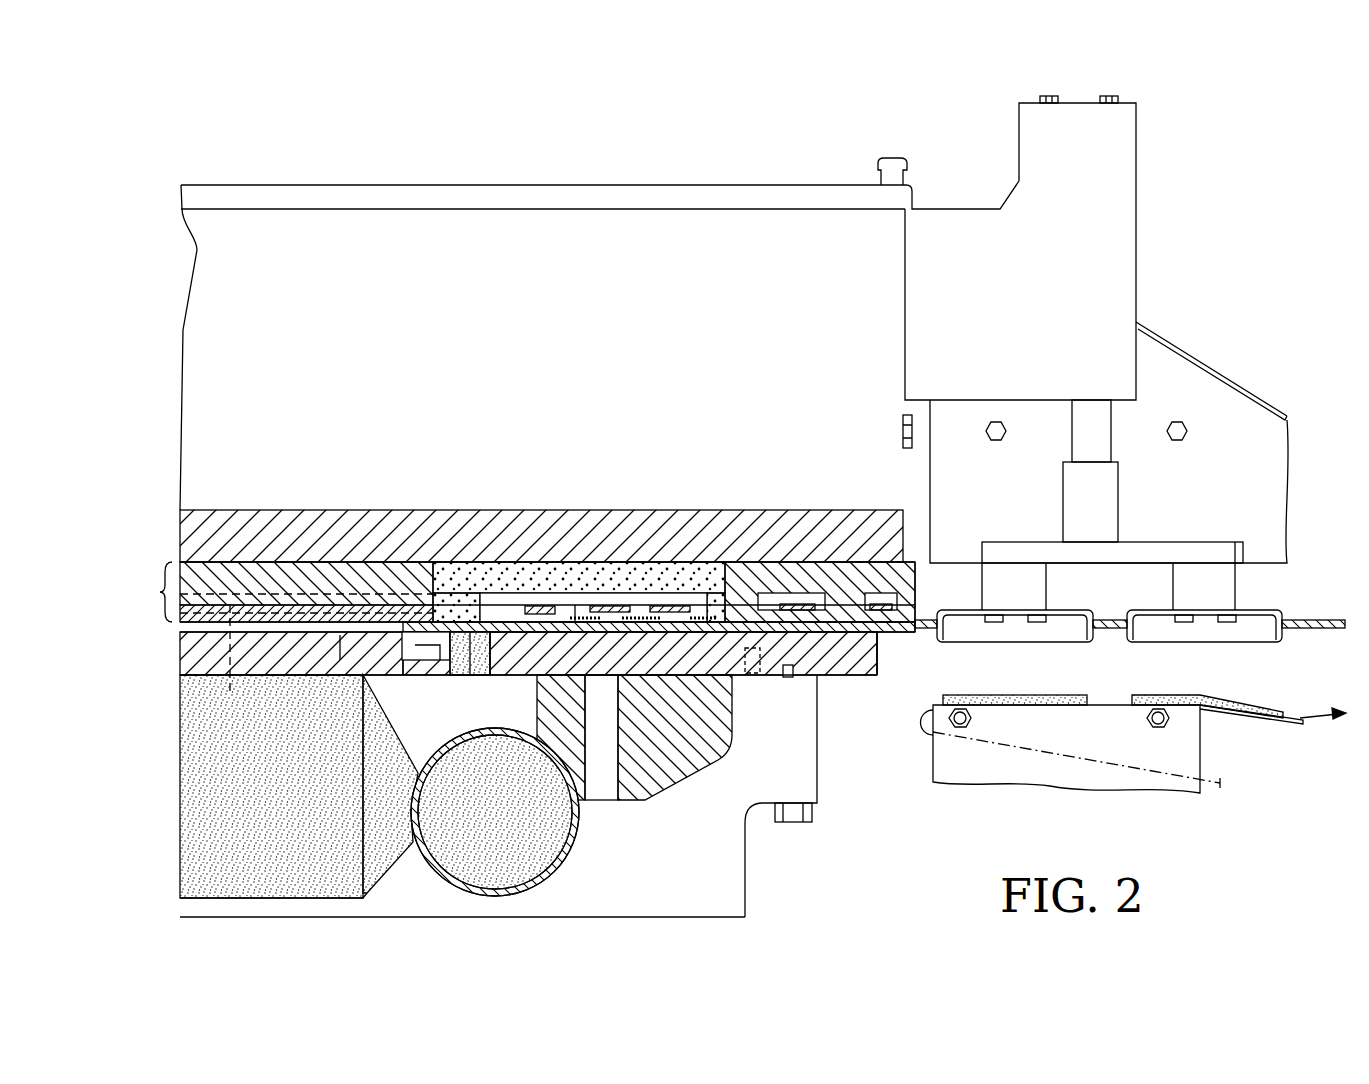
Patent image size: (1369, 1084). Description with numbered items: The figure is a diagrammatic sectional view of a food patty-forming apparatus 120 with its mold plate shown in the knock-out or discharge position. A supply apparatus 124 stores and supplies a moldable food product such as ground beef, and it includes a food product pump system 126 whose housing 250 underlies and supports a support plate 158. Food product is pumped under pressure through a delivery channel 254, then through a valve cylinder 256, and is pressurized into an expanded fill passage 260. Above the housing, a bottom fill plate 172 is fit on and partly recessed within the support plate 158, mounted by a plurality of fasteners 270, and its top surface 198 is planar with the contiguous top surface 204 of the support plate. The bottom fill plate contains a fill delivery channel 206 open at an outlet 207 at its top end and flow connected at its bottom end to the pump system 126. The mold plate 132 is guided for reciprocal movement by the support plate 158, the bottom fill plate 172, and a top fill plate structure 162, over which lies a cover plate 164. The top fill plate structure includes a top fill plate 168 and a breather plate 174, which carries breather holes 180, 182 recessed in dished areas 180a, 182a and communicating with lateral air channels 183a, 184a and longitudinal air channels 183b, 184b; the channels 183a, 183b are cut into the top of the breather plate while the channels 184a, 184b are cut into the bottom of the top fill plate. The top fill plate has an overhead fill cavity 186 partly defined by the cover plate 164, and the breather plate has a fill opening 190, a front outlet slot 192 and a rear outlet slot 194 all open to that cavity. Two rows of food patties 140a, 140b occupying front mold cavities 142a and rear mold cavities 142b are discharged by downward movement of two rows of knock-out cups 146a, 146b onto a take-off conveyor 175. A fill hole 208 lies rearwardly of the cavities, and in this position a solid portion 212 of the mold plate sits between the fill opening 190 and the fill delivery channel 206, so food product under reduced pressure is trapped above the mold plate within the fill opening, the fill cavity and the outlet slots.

The food patty-forming apparatus 120 is at (1222, 221).
The supply apparatus 124 is at (180, 832).
The food product pump system 126 is at (375, 896).
The mold plate 132 is at (1305, 630).
The food patties 140a is at (1247, 700).
The food patties 140b is at (997, 695).
The front mold cavities 142a is at (1133, 628).
The rear mold cavities 142b is at (945, 628).
The knock-out cups 146a is at (1262, 610).
The knock-out cups 146b is at (1050, 610).
The support plate 158 is at (175, 665).
The top fill plate structure 162 is at (158, 592).
The cover plate 164 is at (196, 510).
The top fill plate 168 is at (254, 562).
The bottom fill plate 172 is at (725, 720).
The breather plate 174 is at (300, 600).
The take-off conveyor 175 is at (1284, 722).
The breather holes 180 is at (670, 600).
The dished areas 180a is at (640, 615).
The breather holes 182 is at (865, 600).
The dished areas 182a is at (833, 608).
The lateral air channels 183a is at (575, 620).
The longitudinal air channels 183b is at (230, 665).
The lateral air channels 184a is at (757, 605).
The longitudinal air channels 184b is at (178, 643).
The overhead fill cavity 186 is at (500, 575).
The fill opening 190 is at (466, 630).
The front outlet slot 192 is at (710, 648).
The rear outlet slot 194 is at (522, 628).
The top surface 198 is at (375, 690).
The top surface 204 is at (340, 636).
The fill delivery channel 206 is at (476, 660).
The outlet 207 is at (500, 690).
The fill hole 208 is at (910, 630).
The solid portion 212 is at (470, 630).
The housing 250 is at (818, 787).
The delivery channel 254 is at (215, 757).
The valve cylinder 256 is at (556, 872).
The expanded fill passage 260 is at (519, 718).
The fasteners 270 is at (852, 660).